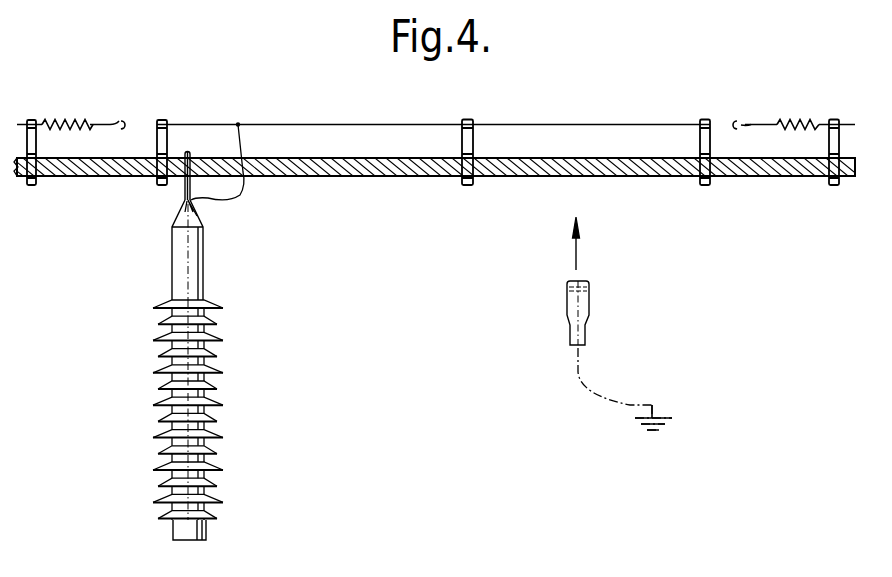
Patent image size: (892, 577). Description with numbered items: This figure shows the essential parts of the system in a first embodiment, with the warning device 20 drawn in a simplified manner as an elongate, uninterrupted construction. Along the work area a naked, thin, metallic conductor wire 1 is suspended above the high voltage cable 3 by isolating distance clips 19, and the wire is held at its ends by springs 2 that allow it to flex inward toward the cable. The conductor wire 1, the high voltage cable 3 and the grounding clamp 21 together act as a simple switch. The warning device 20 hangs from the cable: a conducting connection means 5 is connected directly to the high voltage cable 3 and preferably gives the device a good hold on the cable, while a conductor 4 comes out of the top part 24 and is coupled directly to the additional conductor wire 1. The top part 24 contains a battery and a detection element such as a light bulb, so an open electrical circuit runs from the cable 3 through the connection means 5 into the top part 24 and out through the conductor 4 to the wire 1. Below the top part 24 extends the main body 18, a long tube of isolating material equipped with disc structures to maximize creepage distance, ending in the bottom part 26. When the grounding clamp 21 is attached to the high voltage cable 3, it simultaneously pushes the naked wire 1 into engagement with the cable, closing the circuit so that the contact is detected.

The conductor wire 1 is at (623, 124).
The springs 2 is at (76, 118).
The high voltage cable 3 is at (754, 172).
The conductor 4 is at (246, 184).
The conducting connection means 5 is at (183, 187).
The main body 18 is at (160, 396).
The isolating distance clips 19 is at (466, 137).
The warning device 20 is at (225, 389).
The grounding clamp 21 is at (590, 309).
The top part 24 is at (172, 260).
The bottom part 26 is at (207, 528).